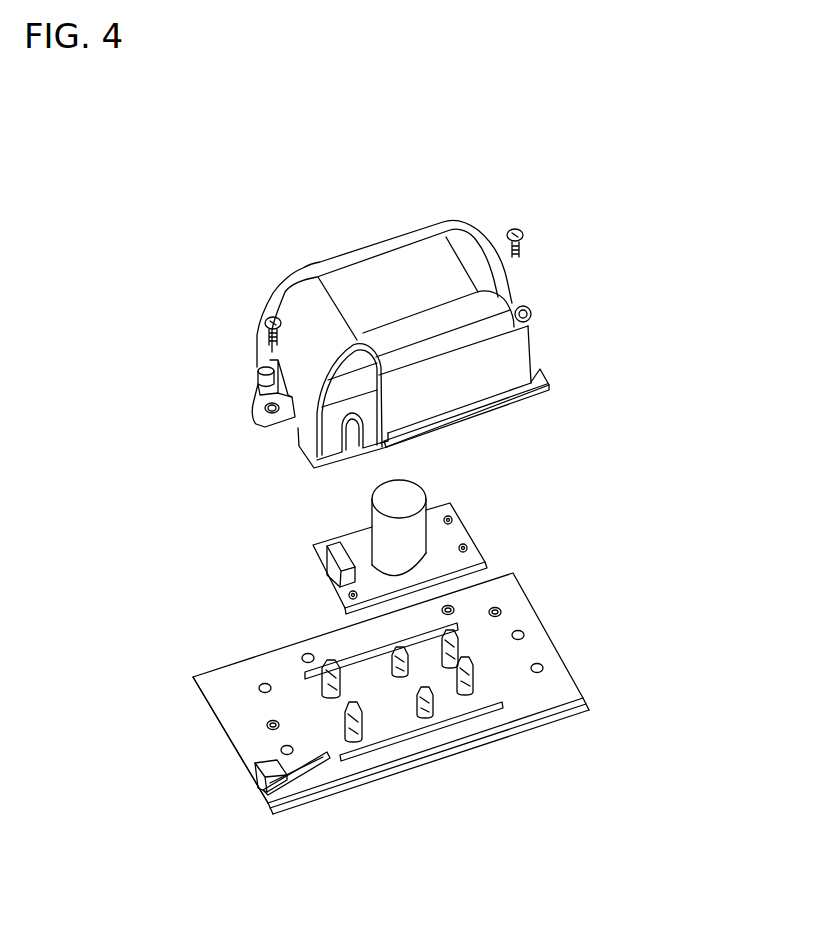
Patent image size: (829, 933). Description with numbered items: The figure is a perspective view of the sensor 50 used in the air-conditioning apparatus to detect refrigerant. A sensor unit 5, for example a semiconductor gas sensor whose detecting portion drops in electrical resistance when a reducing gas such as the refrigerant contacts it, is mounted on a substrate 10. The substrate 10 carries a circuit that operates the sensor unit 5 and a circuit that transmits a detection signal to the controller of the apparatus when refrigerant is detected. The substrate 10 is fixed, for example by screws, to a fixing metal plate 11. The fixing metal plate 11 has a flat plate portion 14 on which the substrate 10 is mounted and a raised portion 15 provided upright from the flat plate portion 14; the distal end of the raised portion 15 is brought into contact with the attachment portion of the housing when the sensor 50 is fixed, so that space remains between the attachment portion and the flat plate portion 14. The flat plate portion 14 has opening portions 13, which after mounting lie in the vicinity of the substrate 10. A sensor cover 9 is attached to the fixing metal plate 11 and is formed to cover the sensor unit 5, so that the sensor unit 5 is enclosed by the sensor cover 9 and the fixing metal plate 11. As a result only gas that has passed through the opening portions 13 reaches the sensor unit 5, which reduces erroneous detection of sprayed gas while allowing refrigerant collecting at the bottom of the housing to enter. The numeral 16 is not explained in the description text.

The sensor 50 is at (200, 352).
The sensor cover 9 is at (465, 380).
The sensor unit 5 is at (390, 503).
The substrate 10 is at (452, 538).
The fixing metal plate 11 is at (515, 612).
The opening portions 13 is at (345, 665).
The flat plate portion 14 is at (238, 738).
The raised portion 15 is at (193, 677).
The side wall 16 is at (340, 792).